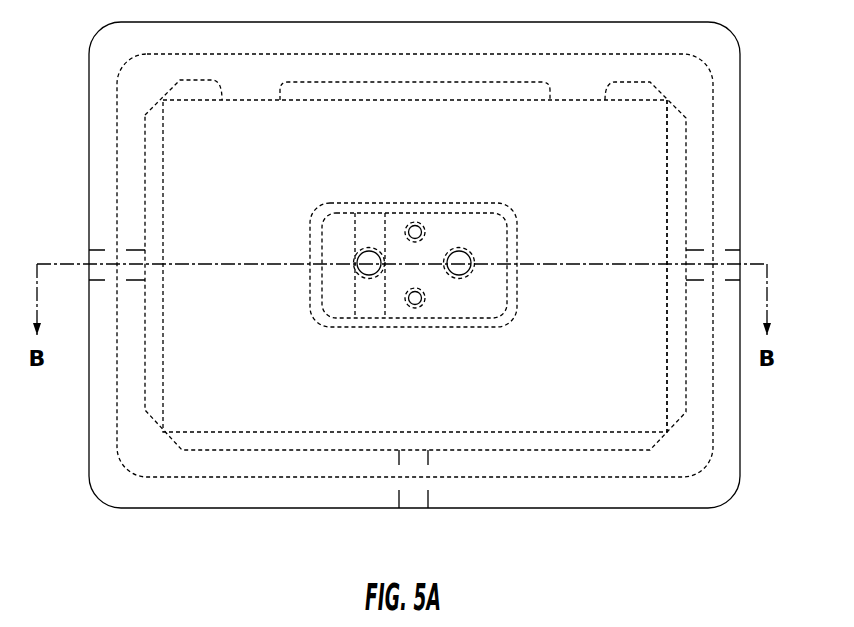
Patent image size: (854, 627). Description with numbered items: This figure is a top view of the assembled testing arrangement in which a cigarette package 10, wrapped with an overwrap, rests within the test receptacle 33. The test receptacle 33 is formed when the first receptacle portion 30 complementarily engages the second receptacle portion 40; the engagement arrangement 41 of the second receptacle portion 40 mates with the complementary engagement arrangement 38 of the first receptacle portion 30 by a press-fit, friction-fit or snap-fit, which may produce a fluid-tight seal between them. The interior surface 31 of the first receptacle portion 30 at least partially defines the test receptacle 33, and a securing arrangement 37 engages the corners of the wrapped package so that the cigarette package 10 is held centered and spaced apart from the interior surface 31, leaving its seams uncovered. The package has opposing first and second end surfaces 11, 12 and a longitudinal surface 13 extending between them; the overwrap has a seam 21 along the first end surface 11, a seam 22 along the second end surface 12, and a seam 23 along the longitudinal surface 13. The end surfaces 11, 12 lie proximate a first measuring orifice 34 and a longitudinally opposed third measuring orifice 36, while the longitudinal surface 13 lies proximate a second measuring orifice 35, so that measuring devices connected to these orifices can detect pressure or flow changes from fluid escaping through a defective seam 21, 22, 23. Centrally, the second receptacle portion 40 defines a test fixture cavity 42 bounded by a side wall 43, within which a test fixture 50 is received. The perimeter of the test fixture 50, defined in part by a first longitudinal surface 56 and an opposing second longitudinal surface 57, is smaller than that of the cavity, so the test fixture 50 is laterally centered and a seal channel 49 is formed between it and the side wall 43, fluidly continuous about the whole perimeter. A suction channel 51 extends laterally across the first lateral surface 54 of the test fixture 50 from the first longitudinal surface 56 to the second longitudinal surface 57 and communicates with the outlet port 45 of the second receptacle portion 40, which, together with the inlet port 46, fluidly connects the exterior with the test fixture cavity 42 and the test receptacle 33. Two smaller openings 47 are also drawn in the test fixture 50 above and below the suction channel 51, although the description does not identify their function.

The cigarette package 10 is at (622, 407).
The first end surface 11 is at (667, 163).
The second end surface 12 is at (163, 133).
The longitudinal surface 13 is at (444, 432).
The seam 21 is at (667, 193).
The seam 22 is at (163, 162).
The seam 23 is at (482, 432).
The first receptacle portion 30 is at (96, 492).
The interior surface 31 is at (280, 440).
The test receptacle 33 is at (317, 442).
The first measuring orifice 34 is at (728, 255).
The second measuring orifice 35 is at (408, 497).
The third measuring orifice 36 is at (103, 258).
The securing arrangement 37 is at (152, 440).
The complementary engagement arrangement 38 is at (712, 121).
The second receptacle portion 40 is at (100, 48).
The engagement arrangement 41 is at (713, 88).
The test fixture cavity 42 is at (322, 208).
The side wall 43 is at (512, 208).
The outlet port 45 is at (368, 250).
The inlet port 46 is at (473, 248).
The alignment hole 47 is at (405, 223).
The seal channel 49 is at (318, 255).
The test fixture 50 is at (462, 303).
The suction channel 51 is at (372, 223).
The first lateral surface 54 is at (483, 251).
The first longitudinal surface 56 is at (453, 320).
The second longitudinal surface 57 is at (452, 208).